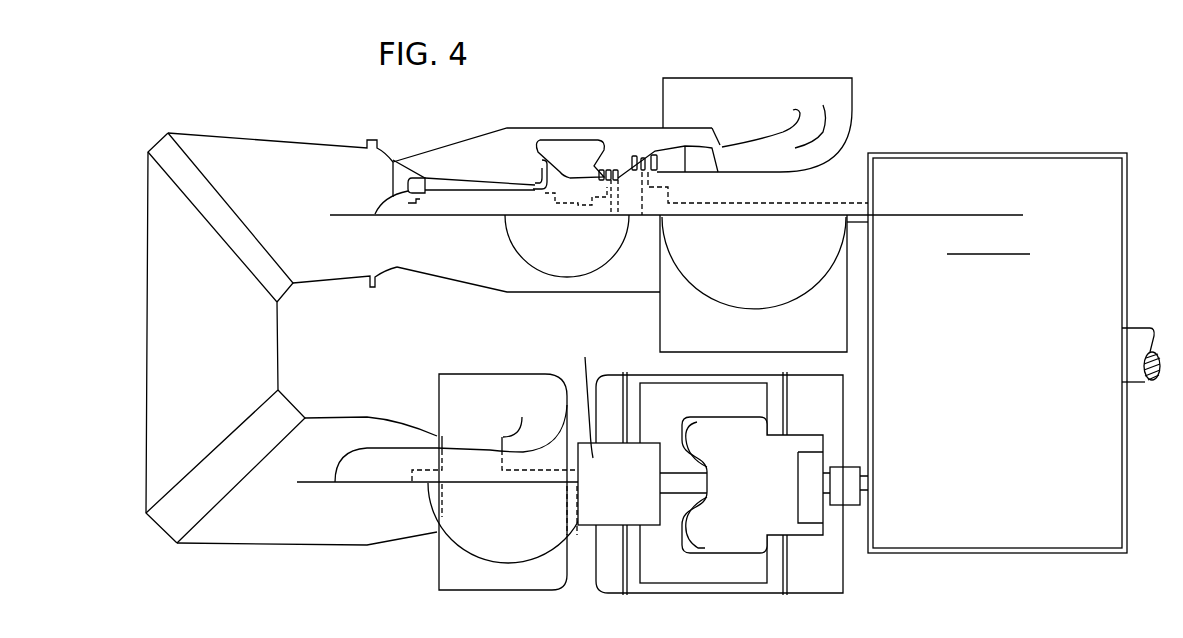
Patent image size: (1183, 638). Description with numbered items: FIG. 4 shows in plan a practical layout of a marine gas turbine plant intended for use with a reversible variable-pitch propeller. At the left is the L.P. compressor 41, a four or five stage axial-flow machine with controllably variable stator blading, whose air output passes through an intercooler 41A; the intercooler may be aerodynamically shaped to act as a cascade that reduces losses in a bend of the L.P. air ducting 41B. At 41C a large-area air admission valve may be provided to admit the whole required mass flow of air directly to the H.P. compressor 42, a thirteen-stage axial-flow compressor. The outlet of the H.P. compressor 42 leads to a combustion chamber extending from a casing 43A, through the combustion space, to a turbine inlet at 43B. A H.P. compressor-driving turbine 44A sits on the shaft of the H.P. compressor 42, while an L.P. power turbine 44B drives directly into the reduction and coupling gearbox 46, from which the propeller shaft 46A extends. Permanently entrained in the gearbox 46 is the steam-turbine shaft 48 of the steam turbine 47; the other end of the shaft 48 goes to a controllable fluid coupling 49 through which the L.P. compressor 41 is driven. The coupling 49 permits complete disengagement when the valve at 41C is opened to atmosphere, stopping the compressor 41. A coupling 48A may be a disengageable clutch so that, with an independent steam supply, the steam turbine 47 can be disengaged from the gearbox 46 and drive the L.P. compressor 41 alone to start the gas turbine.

The L.P. compressor 41 is at (557, 573).
The intercooler 41A is at (218, 483).
The L.P. air ducting 41B is at (222, 360).
The air admission valve 41C is at (282, 284).
The H.P. compressor 42 is at (466, 253).
The casing 43A is at (503, 167).
The turbine inlet 43B is at (570, 152).
The H.P. compressor-driving turbine 44A is at (612, 203).
The L.P. power turbine 44B is at (655, 202).
The reduction and coupling gearbox 46 is at (922, 328).
The propeller shaft 46A is at (1137, 382).
The steam turbine 47 is at (751, 512).
The steam-turbine shaft 48 is at (864, 486).
The coupling 48A is at (848, 470).
The controllable fluid coupling 49 is at (630, 497).